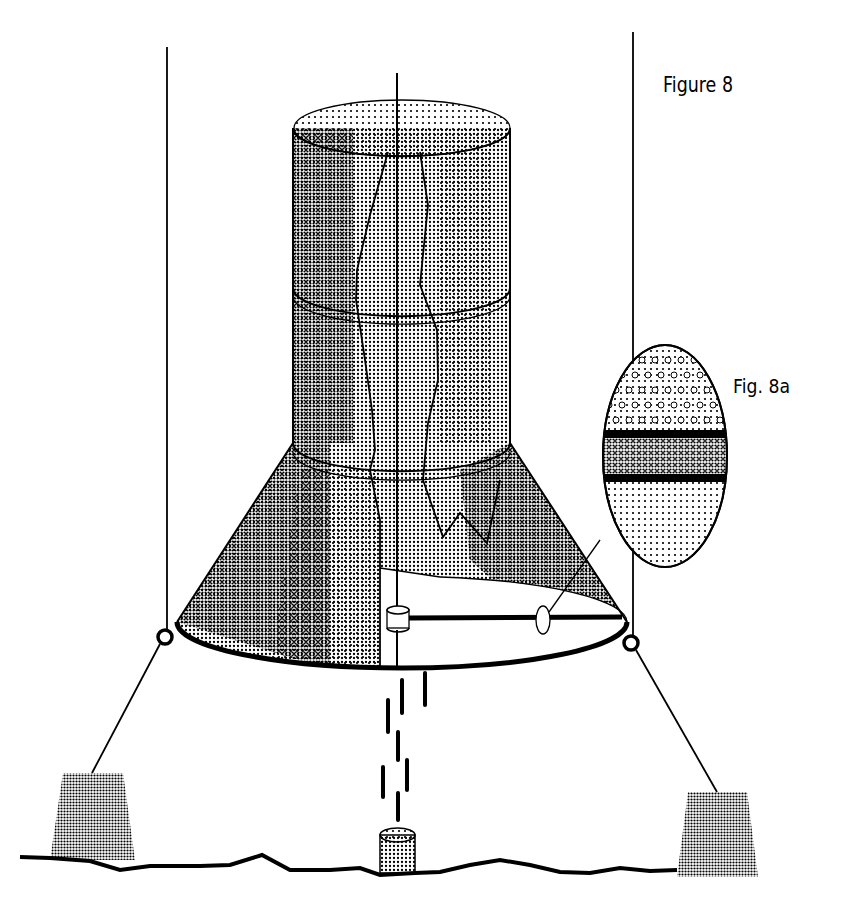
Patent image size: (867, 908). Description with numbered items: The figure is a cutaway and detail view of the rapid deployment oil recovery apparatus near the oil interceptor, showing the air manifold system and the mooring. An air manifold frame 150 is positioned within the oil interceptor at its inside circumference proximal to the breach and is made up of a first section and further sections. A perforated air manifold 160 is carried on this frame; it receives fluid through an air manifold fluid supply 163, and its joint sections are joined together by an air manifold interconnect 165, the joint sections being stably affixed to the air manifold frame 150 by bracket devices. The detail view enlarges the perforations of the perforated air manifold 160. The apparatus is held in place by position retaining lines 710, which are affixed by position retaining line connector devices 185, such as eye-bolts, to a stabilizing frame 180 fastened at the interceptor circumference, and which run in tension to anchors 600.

In FIG. 8, the air manifold frame 150 is at (335, 668).
In FIG. 8, the perforated air manifold 160 is at (500, 623).
In FIG. 8A, the perforated air manifold 160 is at (667, 463).
In FIG. 8, the air manifold fluid supply 163 is at (399, 113).
In FIG. 8, the air manifold interconnect 165 is at (410, 627).
In FIG. 8, the stabilizing frame 180 is at (205, 637).
In FIG. 8, the position retaining line connector device 185 is at (158, 627).
In FIG. 8, the anchor 600 is at (112, 818).
In FIG. 8, the position retaining line 710 is at (633, 220).